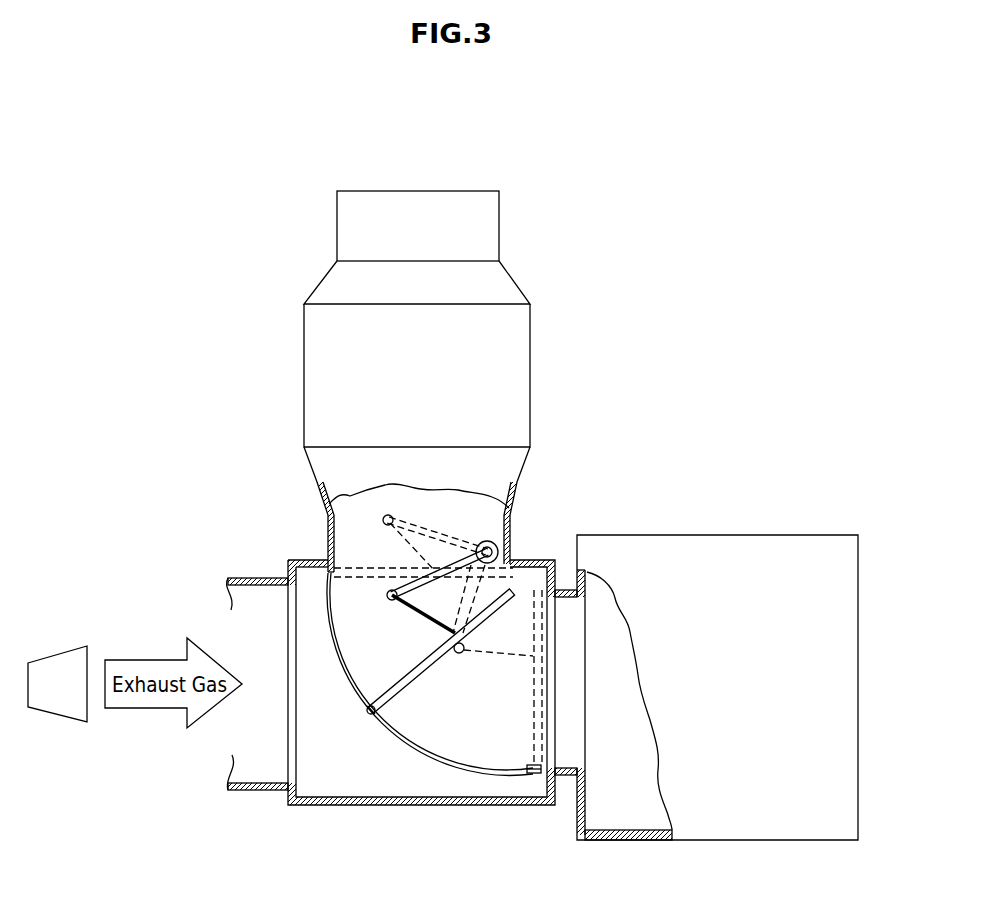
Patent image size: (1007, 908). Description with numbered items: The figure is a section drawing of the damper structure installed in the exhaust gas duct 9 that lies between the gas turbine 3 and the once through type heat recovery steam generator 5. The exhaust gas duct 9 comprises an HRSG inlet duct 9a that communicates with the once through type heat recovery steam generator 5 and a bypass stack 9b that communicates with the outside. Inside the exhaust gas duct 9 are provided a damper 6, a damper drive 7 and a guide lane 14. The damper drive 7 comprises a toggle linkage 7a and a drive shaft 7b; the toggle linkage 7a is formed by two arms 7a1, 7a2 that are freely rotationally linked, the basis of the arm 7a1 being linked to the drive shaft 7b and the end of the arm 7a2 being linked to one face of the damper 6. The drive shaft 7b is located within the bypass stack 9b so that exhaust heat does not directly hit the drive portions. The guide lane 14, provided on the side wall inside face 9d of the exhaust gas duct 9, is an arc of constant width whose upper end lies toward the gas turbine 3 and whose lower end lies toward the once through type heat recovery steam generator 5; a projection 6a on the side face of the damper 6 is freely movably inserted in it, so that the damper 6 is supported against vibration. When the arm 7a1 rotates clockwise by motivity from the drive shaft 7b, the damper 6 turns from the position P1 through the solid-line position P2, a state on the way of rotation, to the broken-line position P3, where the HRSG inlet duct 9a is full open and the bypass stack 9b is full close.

The gas turbine 3 is at (62, 708).
The once through type heat recovery steam generator 5 is at (722, 492).
The damper 6 is at (433, 675).
The projection 6a is at (381, 693).
The damper drive 7 is at (375, 594).
The toggle linkage 7a is at (400, 582).
The arm 7a1 is at (427, 572).
The arm 7a2 is at (423, 611).
The drive shaft 7b is at (496, 545).
The exhaust gas duct 9 is at (258, 792).
The HRSG inlet duct 9a is at (563, 755).
The bypass stack 9b is at (512, 340).
The side wall inside face 9d is at (341, 775).
The guide lane (guide mechanism) 14 is at (333, 690).
The damper position P1 is at (535, 784).
The damper position on the way of rotation P2 is at (359, 719).
The damper position fully closing the bypass stack P3 is at (315, 584).